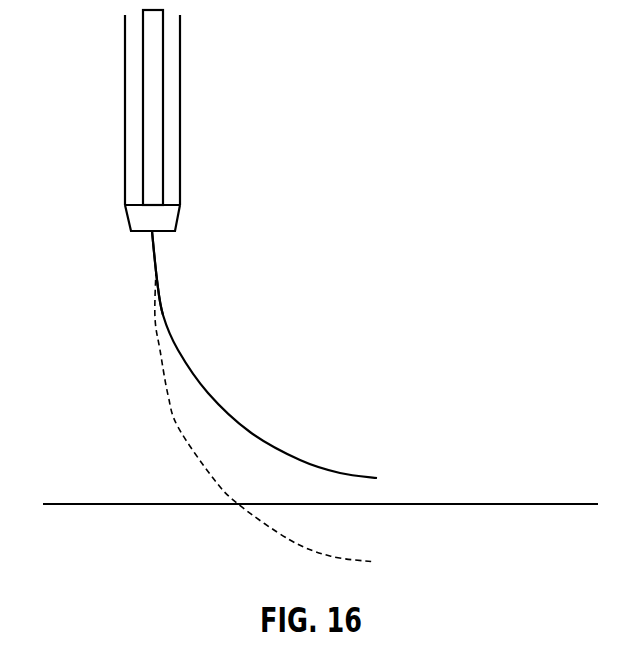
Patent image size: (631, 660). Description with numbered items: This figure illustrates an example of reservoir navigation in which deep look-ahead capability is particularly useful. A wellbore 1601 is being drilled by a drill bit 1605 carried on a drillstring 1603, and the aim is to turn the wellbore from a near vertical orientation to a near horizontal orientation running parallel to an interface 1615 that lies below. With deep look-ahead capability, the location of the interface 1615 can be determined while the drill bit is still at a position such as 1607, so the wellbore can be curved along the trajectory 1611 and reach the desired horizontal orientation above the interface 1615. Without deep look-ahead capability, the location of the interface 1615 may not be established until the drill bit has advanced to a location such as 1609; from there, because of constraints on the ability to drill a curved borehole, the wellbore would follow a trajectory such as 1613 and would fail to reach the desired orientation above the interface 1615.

The wellbore 1601 is at (125, 45).
The drillstring 1603 is at (143, 110).
The drill bit 1605 is at (143, 204).
The drill bit position 1607 is at (131, 231).
The drill bit location 1609 is at (162, 302).
The trajectory 1611 is at (208, 393).
The trajectory 1613 is at (178, 427).
The interface 1615 is at (128, 504).